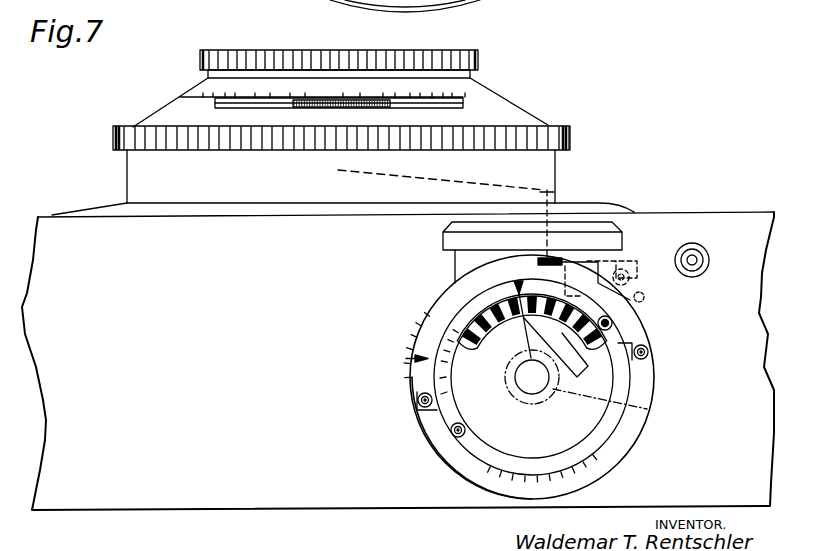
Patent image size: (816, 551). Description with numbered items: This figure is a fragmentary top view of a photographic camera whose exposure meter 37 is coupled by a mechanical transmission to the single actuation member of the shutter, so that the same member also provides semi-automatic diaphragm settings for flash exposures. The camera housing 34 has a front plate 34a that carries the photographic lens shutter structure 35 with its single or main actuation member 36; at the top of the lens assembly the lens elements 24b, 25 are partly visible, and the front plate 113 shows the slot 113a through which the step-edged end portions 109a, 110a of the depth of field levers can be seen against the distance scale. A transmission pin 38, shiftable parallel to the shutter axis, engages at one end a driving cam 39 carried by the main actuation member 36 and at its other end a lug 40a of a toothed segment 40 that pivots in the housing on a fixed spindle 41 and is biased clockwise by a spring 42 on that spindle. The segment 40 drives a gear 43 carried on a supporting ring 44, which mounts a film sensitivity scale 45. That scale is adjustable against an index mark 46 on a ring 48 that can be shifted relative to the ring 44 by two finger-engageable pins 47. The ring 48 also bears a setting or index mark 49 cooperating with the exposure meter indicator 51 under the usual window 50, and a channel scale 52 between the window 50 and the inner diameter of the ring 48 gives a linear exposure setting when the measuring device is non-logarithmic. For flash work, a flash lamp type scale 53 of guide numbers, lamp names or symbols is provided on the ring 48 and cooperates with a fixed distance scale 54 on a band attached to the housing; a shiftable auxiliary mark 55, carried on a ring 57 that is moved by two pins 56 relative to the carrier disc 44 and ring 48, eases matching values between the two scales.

The lens mount ring 24b is at (375, 12).
The lens 25 is at (432, 8).
The camera housing 34 is at (133, 490).
The front plate 34a is at (80, 210).
The photographic lens shutter structure 35 is at (580, 108).
The single or main actuation member 36 is at (113, 133).
The slot 113a is at (247, 107).
The front plate 113 is at (177, 114).
The end portion of lever 109a is at (360, 107).
The end portion of lever 110a is at (375, 68).
The driving cam 39 is at (470, 182).
The transmission pin 38 is at (552, 208).
The lug 40a is at (612, 260).
The fixed spindle 41 is at (629, 284).
The spring 42 is at (646, 300).
The toothed segment 40 is at (598, 303).
The supporting ring 44 is at (644, 387).
The ring 48 is at (599, 439).
The window 50 is at (457, 343).
The gear 43 is at (647, 409).
The channel scale 52 is at (500, 303).
The exposure meter indicator 51 is at (487, 330).
The index mark 49 is at (513, 284).
The ring 57 is at (432, 317).
The fixed distance scale 54 is at (411, 338).
The shiftable auxiliary mark 55 is at (412, 359).
The flash lamp type scale 53 is at (433, 378).
The pins 56 is at (416, 402).
The finger-engageable pins 47 is at (452, 432).
The film sensitivity scale 45 is at (556, 490).
The index mark 46 is at (514, 465).
The exposure meter 37 is at (443, 469).